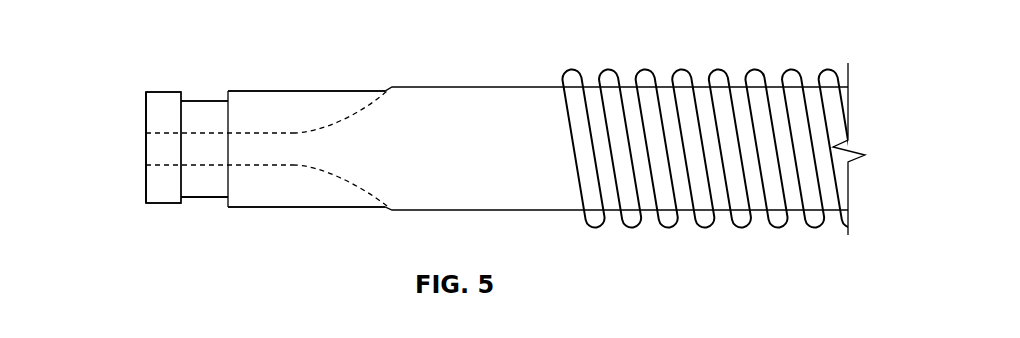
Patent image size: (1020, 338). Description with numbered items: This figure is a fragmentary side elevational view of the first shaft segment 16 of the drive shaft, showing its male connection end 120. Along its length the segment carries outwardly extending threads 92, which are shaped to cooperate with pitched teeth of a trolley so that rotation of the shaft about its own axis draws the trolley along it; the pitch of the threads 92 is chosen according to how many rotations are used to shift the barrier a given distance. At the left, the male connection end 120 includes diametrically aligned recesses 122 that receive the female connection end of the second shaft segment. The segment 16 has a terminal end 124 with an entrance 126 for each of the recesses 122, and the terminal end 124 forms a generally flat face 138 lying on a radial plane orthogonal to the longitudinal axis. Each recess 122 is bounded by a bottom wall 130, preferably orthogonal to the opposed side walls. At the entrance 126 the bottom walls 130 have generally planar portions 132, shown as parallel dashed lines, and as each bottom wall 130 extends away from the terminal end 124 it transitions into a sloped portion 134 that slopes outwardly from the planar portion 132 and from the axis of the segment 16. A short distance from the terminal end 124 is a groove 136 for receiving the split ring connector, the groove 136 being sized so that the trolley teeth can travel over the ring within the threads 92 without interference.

The first shaft segment 16 is at (423, 66).
The threads 92 is at (718, 72).
The male connection end 120 is at (188, 238).
The recesses 122 is at (302, 108).
The terminal end 124 is at (145, 209).
The entrance 126 is at (145, 115).
The bottom wall 130 is at (258, 165).
The planar portions 132 is at (201, 133).
The sloped portion 134 is at (338, 120).
The groove 136 is at (202, 197).
The flat face 138 is at (146, 148).